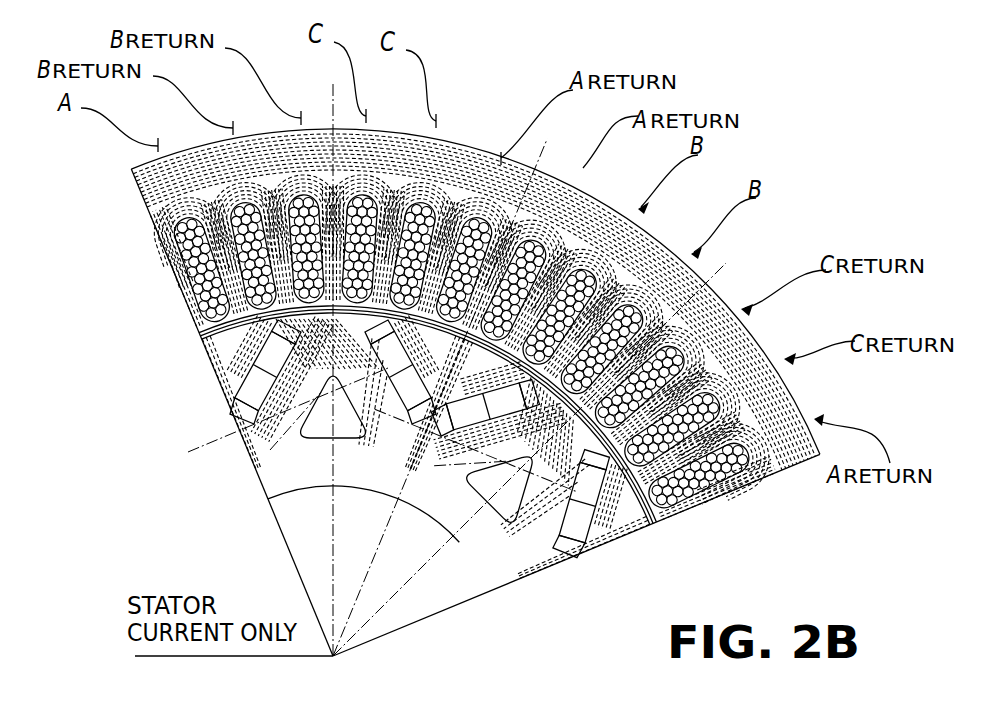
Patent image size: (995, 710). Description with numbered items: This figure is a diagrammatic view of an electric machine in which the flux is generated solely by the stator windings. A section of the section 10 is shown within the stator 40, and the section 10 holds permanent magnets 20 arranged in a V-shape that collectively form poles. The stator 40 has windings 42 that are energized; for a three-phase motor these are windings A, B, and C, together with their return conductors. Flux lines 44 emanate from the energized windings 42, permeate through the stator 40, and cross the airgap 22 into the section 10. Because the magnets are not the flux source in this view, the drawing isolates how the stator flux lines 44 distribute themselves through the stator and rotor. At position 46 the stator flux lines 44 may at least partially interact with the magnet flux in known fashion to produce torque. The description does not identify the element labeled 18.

The section 10 is at (548, 562).
The rotor 18 is at (442, 522).
The permanent magnets 20 is at (258, 452).
The airgap 22 is at (637, 520).
The stator 40 is at (767, 474).
The windings 42 is at (354, 198).
The flux lines 44 is at (438, 140).
The position 46 is at (292, 178).